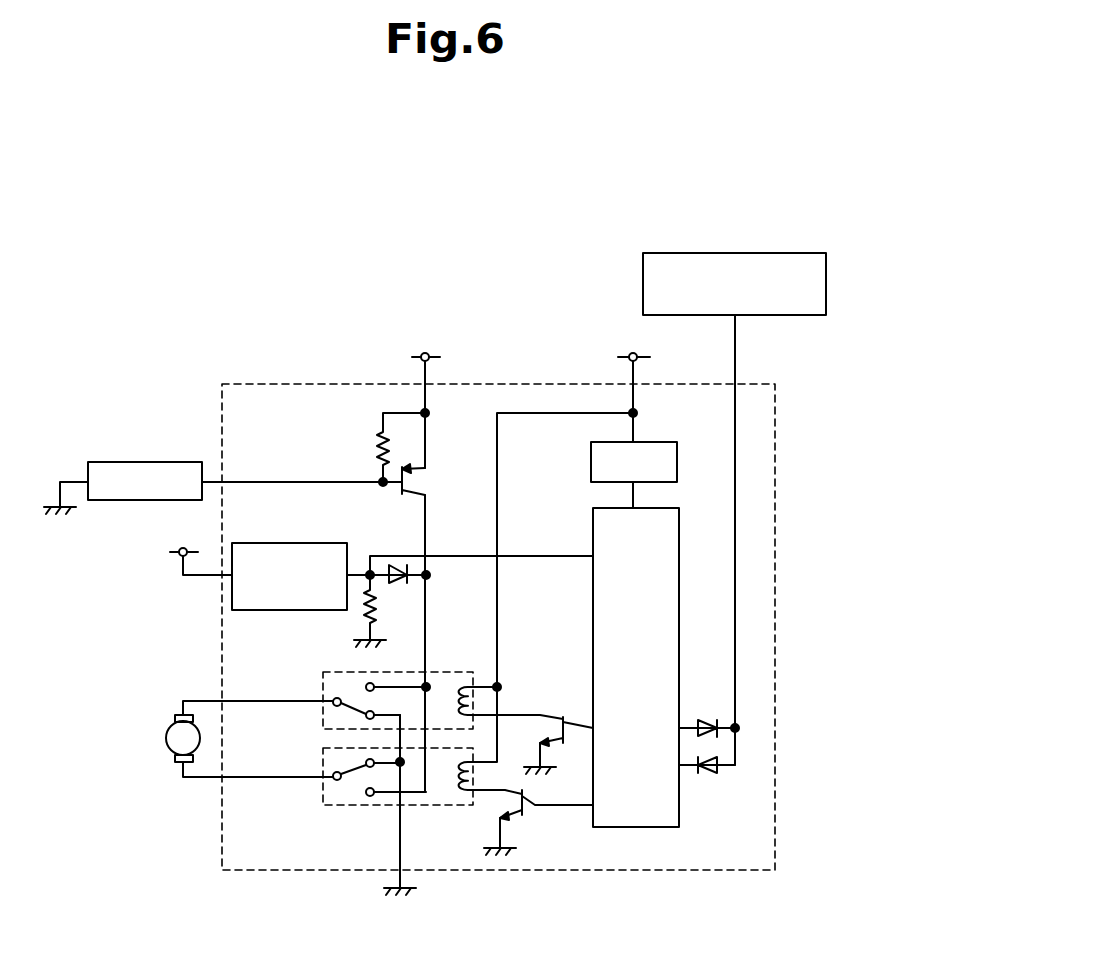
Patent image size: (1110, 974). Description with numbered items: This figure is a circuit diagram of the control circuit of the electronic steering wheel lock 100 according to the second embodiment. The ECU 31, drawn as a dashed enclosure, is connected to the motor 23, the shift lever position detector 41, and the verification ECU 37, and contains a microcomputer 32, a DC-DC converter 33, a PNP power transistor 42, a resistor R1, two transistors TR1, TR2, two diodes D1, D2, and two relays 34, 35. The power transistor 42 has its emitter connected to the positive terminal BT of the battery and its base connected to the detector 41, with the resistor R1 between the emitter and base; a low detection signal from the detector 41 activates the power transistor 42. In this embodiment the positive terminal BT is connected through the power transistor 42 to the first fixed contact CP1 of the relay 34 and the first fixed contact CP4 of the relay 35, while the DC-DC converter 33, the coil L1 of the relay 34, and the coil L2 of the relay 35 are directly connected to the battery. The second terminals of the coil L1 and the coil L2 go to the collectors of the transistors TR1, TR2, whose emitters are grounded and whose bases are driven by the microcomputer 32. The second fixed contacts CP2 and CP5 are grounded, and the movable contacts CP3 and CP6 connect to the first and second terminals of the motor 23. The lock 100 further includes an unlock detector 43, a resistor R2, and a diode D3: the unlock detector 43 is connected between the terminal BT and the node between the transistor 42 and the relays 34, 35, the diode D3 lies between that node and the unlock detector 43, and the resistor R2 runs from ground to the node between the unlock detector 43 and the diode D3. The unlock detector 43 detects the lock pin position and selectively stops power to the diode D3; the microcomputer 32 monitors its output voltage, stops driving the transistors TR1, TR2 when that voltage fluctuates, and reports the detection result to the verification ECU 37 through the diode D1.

The electronic steering wheel lock 100 is at (722, 211).
The verification ECU 37 is at (814, 253).
The ECU 31 is at (720, 871).
The microcomputer 32 is at (679, 528).
The DC-DC converter 33 is at (678, 462).
The relay 34 is at (445, 671).
The relay 35 is at (422, 806).
The shift lever position detector 41 is at (134, 461).
The PNP power transistor 42 is at (391, 485).
The unlock detector 43 is at (284, 543).
The motor 23 is at (165, 734).
The resistor R1 is at (377, 440).
The resistor R2 is at (366, 616).
The diode D1 is at (706, 718).
The diode D2 is at (710, 776).
The diode D3 is at (404, 584).
The coil L1 is at (460, 681).
The coil L2 is at (462, 796).
The transistor TR1 is at (554, 713).
The transistor TR2 is at (527, 808).
The first fixed contact CP1 is at (375, 685).
The second fixed contact CP2 is at (356, 703).
The movable contact CP3 is at (330, 711).
The first fixed contact CP4 is at (372, 797).
The second fixed contact CP5 is at (356, 770).
The movable contact CP6 is at (330, 771).
The positive terminal BT is at (428, 352).